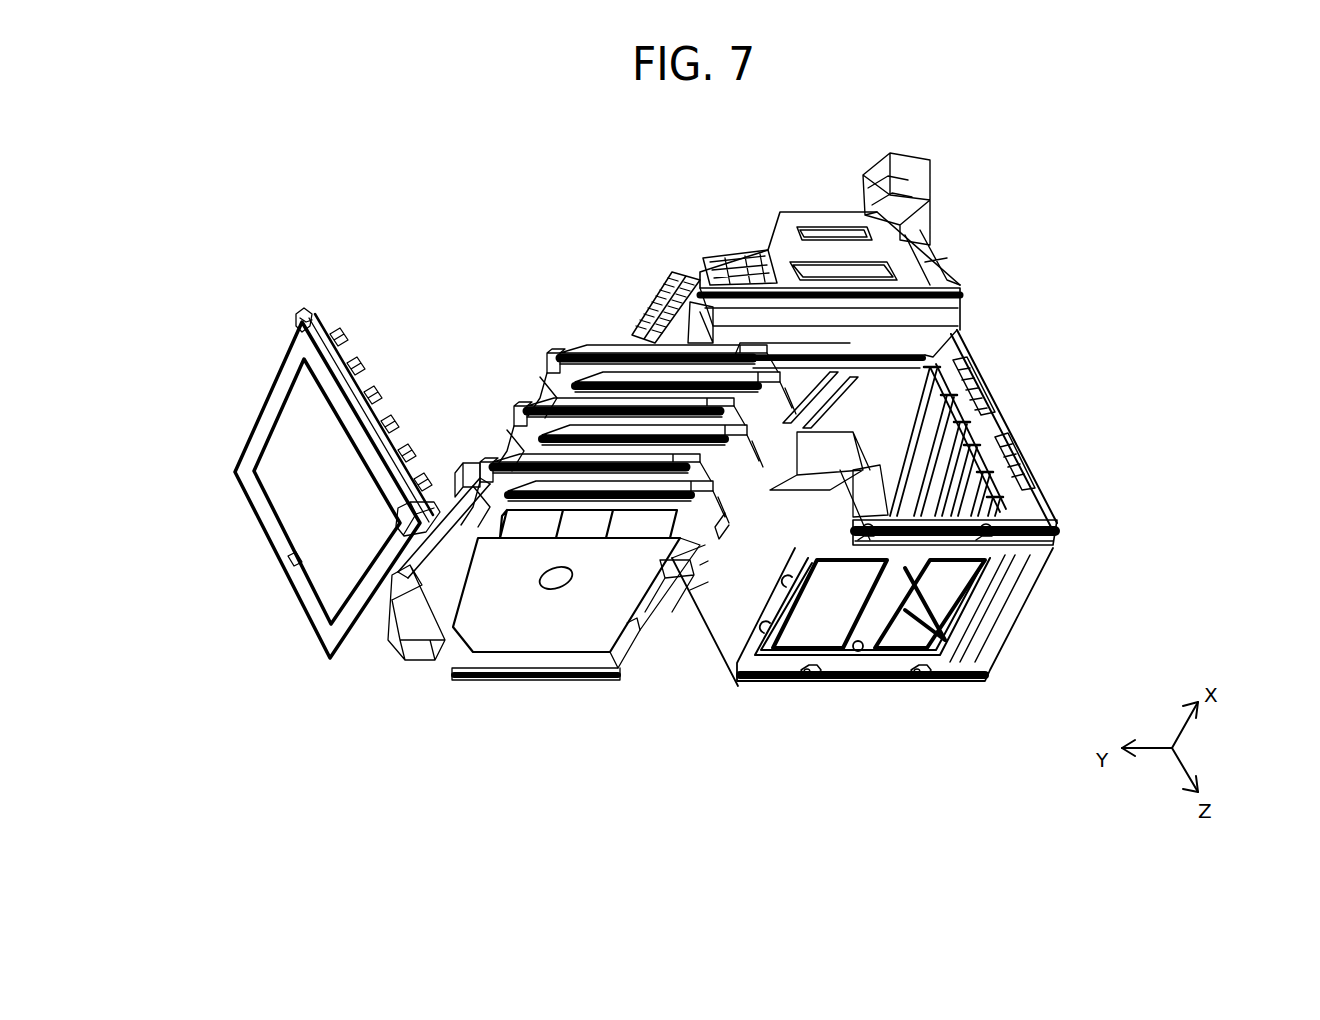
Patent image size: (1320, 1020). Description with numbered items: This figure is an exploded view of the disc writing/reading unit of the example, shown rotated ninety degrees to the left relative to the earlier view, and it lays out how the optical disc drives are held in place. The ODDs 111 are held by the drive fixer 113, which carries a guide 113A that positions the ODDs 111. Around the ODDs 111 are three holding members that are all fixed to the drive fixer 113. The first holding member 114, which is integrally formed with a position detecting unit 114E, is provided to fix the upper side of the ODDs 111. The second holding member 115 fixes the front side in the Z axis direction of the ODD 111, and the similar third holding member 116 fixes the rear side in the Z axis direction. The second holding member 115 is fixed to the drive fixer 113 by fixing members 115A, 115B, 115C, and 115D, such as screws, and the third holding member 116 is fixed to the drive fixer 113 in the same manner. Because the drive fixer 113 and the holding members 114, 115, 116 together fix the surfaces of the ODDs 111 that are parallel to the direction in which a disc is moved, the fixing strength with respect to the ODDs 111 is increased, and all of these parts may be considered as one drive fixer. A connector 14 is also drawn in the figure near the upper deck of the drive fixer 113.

The connector 14 is at (710, 262).
The ODD 111 is at (563, 641).
The drive fixer 113 is at (885, 458).
The guide 113A is at (963, 488).
The first holding member 114 is at (304, 480).
The position detecting unit 114E is at (287, 352).
The second holding member 115 is at (879, 655).
The fixing member 115A is at (807, 673).
The fixing member 115B is at (917, 673).
The fixing member 115C is at (985, 538).
The fixing member 115D is at (873, 538).
The third holding member 116 is at (796, 432).